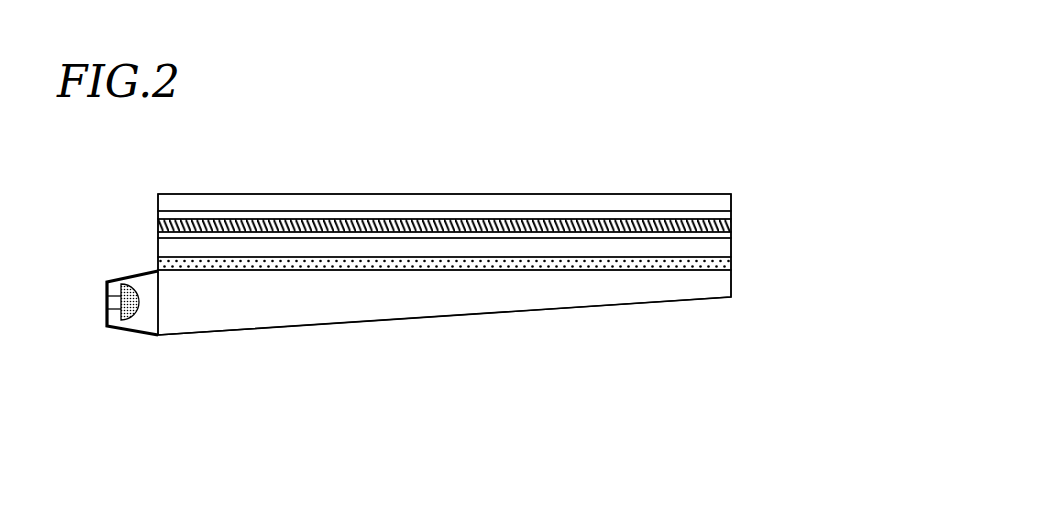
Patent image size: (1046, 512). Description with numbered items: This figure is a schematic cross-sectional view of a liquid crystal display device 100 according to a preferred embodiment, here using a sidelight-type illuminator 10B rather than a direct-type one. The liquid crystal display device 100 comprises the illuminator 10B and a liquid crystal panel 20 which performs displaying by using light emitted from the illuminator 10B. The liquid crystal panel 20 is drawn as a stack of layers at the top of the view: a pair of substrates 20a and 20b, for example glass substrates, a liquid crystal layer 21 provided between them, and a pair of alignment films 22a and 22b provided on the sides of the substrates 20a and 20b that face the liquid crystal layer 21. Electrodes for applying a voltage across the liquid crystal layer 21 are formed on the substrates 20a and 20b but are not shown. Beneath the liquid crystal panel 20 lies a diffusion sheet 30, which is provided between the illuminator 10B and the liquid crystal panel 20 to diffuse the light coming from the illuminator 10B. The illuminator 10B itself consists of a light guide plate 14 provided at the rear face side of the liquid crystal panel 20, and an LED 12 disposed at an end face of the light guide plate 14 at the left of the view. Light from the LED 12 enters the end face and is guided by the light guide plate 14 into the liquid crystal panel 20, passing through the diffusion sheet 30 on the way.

The liquid crystal display device 100 is at (703, 146).
The liquid crystal panel 20 is at (155, 193).
The substrate 20b is at (726, 201).
The alignment film 22b is at (732, 212).
The liquid crystal layer 21 is at (732, 225).
The alignment film 22a is at (732, 236).
The substrate 20a is at (732, 247).
The diffusion sheet 30 is at (157, 262).
The light guide plate 14 is at (370, 300).
The illuminator 10B is at (82, 278).
The LED 12 is at (137, 314).